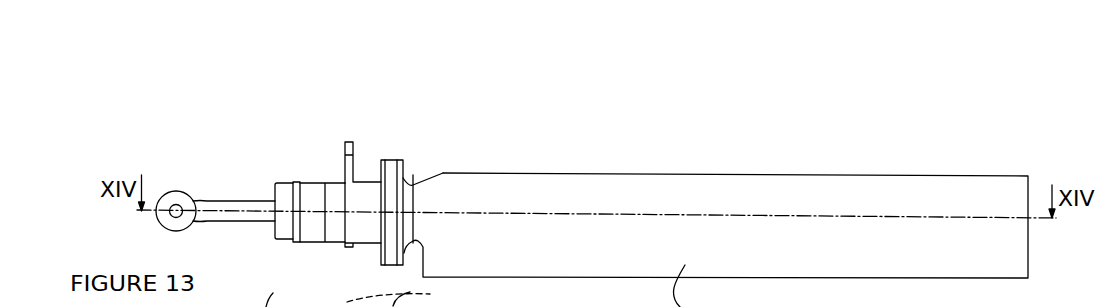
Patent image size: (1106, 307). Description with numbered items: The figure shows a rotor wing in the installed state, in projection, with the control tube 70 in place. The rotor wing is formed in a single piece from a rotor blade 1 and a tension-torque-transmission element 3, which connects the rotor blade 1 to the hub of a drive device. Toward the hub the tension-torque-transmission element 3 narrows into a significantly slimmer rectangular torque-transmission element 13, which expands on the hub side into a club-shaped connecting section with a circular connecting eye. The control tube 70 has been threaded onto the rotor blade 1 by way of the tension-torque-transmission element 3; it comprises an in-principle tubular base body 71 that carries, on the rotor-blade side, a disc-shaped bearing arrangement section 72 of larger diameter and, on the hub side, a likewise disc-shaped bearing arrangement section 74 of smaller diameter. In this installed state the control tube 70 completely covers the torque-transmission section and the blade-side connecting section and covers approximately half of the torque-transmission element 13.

The rotor blade 1 is at (783, 93).
The tension-torque-transmission element 3 is at (239, 182).
The torque-transmission element 13 is at (262, 206).
The control tube 70 is at (350, 247).
The base body 71 is at (310, 231).
The bearing arrangement section 72 is at (384, 265).
The bearing arrangement section 74 is at (285, 226).